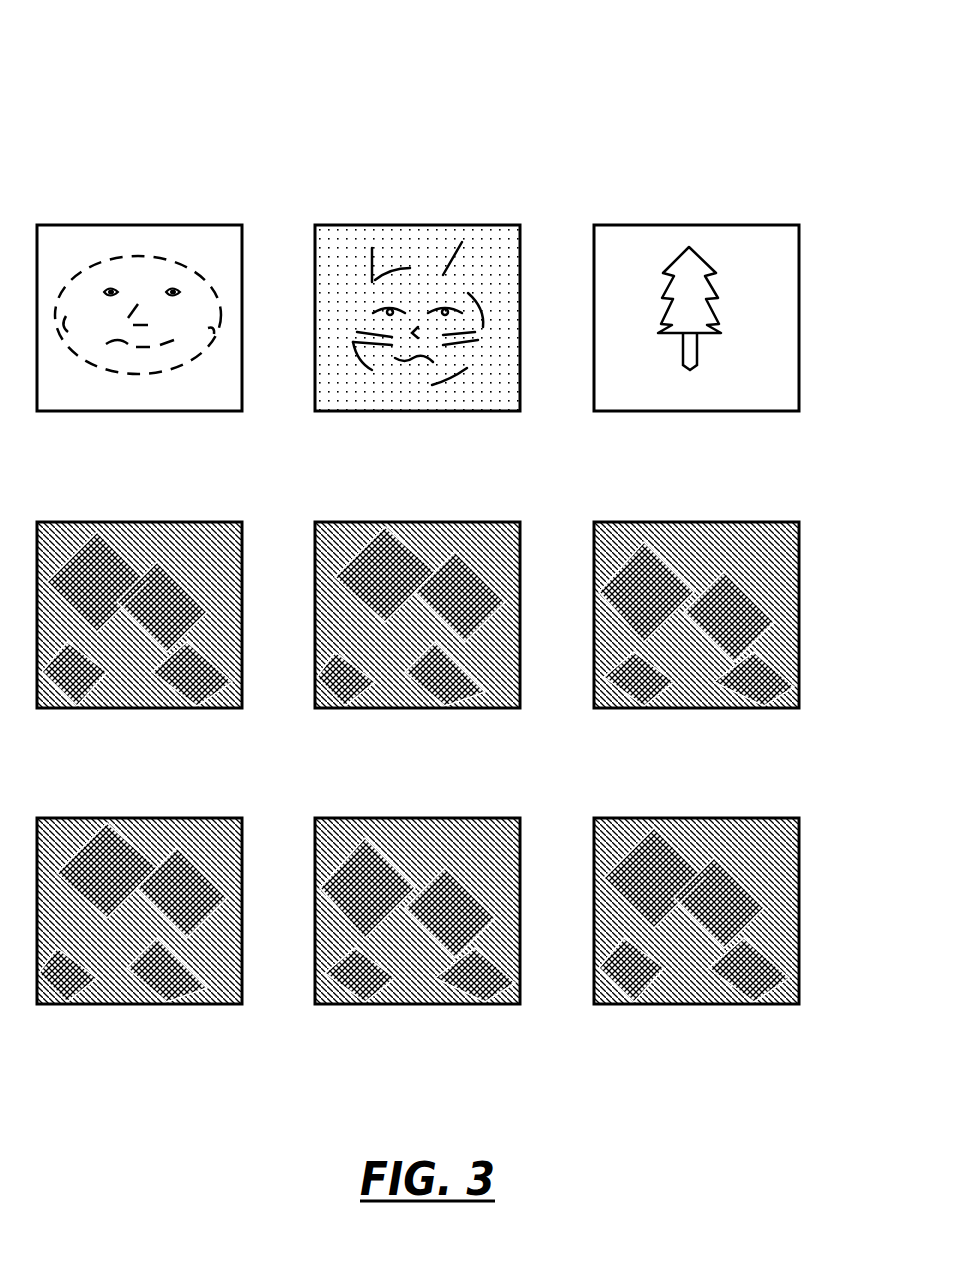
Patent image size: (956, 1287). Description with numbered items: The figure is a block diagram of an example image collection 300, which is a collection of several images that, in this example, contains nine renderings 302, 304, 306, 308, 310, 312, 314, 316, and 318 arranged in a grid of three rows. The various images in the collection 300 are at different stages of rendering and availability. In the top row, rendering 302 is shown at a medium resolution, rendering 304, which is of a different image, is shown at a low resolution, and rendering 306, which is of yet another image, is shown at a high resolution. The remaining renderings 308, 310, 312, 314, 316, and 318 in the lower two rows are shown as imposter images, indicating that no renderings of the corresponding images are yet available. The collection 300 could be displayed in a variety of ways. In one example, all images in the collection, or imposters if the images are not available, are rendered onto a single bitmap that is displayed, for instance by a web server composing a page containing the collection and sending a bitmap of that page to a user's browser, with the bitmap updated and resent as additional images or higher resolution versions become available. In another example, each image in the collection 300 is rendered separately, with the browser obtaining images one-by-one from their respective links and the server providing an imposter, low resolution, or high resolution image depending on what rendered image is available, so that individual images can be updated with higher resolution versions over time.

The collection 300 is at (709, 101).
The rendering 302 is at (203, 225).
The rendering 304 is at (481, 225).
The rendering 306 is at (760, 225).
The rendering 308 is at (203, 522).
The rendering 310 is at (481, 522).
The rendering 312 is at (760, 522).
The rendering 314 is at (203, 818).
The rendering 316 is at (481, 818).
The rendering 318 is at (760, 818).